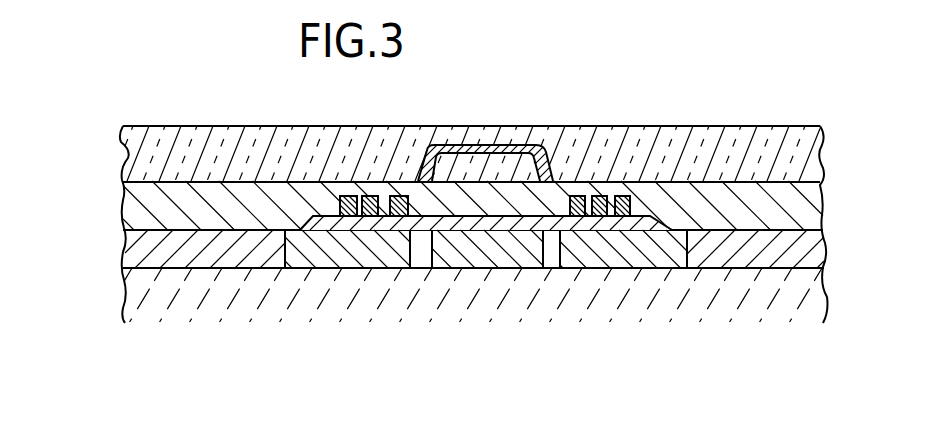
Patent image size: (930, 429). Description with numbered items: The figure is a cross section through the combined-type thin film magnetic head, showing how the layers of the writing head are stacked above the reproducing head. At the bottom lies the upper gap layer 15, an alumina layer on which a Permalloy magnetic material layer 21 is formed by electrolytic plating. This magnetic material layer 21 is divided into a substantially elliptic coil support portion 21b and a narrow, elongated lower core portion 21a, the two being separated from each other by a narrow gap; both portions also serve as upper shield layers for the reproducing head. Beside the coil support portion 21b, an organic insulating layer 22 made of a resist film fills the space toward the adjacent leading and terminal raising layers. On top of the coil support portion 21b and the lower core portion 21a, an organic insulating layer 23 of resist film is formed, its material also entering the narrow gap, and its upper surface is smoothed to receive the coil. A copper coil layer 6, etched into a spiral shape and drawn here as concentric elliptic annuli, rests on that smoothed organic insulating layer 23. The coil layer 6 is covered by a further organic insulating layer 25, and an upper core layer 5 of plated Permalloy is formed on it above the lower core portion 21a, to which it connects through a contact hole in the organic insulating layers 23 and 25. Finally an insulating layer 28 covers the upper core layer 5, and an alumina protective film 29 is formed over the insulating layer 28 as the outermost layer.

The upper gap layer 15 is at (150, 286).
The magnetic material layer 21 is at (492, 268).
The lower core portion 21a is at (512, 232).
The coil support portion 21b is at (655, 248).
The organic insulating layer 22 is at (742, 253).
The organic insulating layer 23 is at (395, 233).
The organic insulating layer 25 is at (693, 198).
The insulating layer 28 is at (462, 146).
The protective film 29 is at (162, 126).
The upper core layer 5 is at (537, 178).
The coil layer 6 is at (610, 196).